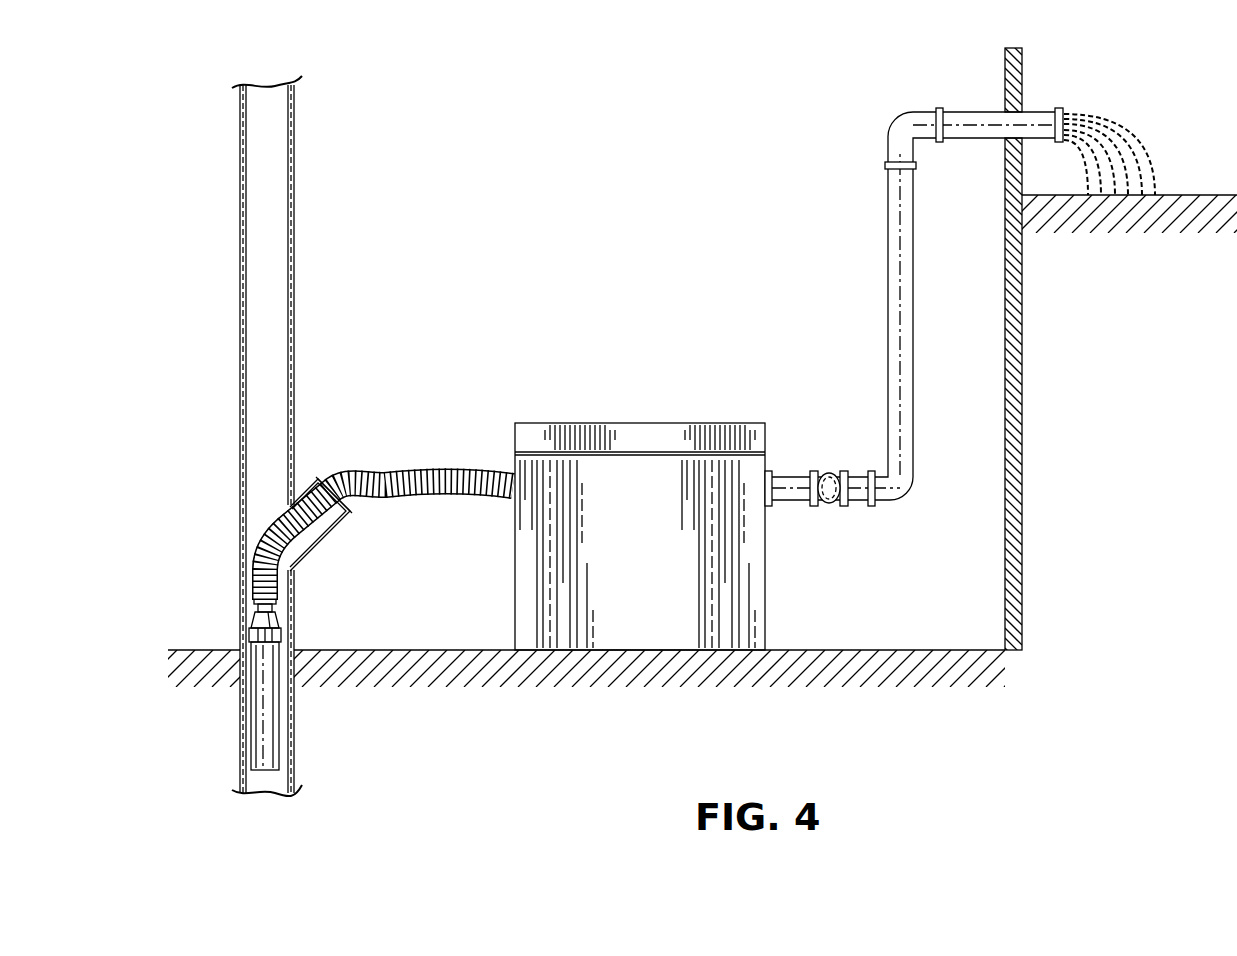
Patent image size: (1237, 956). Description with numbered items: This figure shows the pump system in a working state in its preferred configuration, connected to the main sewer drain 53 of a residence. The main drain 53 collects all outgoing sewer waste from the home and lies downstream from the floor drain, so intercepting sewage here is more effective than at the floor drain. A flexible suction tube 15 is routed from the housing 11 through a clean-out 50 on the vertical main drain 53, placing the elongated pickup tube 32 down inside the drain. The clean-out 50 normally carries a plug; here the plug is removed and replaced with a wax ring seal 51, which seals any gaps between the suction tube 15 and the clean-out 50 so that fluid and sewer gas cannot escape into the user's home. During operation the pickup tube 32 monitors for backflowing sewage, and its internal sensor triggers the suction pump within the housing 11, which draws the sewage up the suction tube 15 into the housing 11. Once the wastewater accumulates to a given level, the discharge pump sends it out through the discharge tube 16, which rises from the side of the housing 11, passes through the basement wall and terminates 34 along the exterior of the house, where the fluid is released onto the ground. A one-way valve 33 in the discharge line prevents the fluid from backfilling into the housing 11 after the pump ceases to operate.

The housing 11 is at (766, 586).
The suction tube 15 is at (438, 472).
The discharge tube 16 is at (888, 348).
The pickup tube 32 is at (258, 722).
The one-way valve 33 is at (831, 505).
The discharge tube end 34 is at (1058, 108).
The clean-out 50 is at (300, 568).
The wax ring seal 51 is at (323, 478).
The main sewer drain 53 is at (257, 383).